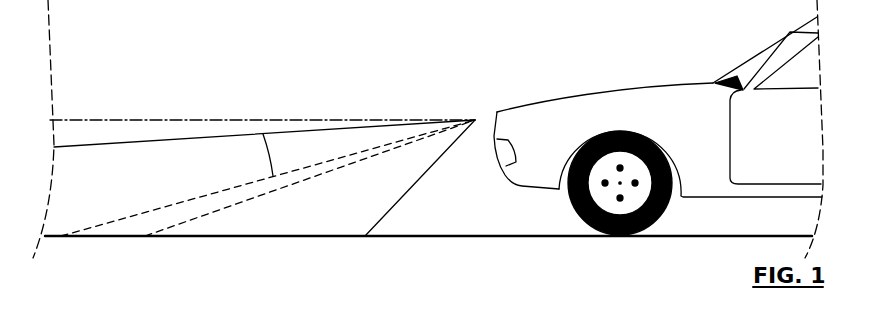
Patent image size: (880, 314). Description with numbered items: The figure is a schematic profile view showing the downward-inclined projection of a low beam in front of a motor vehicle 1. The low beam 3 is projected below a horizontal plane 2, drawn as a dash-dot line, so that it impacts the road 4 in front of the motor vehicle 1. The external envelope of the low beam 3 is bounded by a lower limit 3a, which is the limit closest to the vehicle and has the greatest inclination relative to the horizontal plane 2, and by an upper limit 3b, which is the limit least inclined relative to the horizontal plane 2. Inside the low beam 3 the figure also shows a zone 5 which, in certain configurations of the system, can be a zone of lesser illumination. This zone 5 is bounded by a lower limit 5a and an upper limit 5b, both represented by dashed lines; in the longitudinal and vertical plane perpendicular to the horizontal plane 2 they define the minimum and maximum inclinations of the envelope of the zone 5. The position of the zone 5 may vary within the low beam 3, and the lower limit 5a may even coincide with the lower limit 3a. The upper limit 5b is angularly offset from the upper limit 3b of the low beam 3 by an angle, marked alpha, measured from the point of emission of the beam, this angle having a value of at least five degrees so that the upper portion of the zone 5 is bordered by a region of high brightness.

The motor vehicle 1 is at (590, 102).
The horizontal plane 2 is at (111, 120).
The low beam 3 is at (251, 222).
The lower limit of the low beam 3a is at (372, 218).
The upper limit of the low beam 3b is at (306, 131).
The road 4 is at (428, 234).
The zone of lesser illumination 5 is at (129, 225).
The lower limit of the zone 5a is at (196, 220).
The upper limit of the zone 5b is at (92, 228).